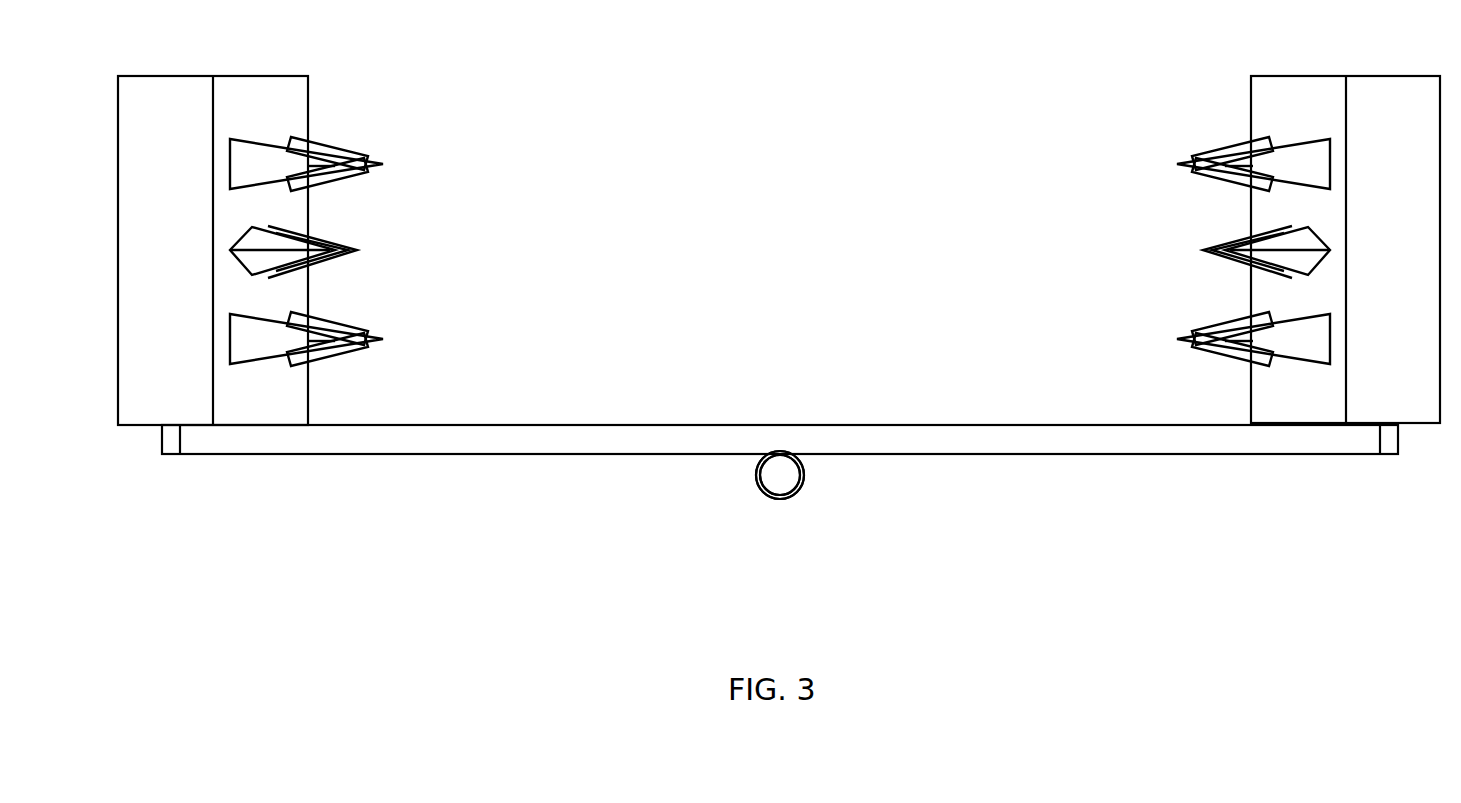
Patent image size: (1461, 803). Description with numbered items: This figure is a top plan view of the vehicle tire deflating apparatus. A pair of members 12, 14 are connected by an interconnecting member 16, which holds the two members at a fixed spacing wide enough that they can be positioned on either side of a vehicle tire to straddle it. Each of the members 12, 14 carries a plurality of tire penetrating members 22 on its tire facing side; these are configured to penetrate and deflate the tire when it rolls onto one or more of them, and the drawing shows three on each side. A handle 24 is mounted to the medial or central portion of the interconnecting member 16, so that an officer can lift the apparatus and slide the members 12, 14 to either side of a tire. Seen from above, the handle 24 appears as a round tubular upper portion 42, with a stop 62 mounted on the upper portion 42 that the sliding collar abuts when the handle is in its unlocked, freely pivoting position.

The member 12 is at (181, 92).
The member 14 is at (1416, 91).
The interconnecting member 16 is at (783, 437).
The tire penetrating member 22 is at (318, 335).
The handle 24 is at (785, 505).
The upper portion 42 is at (779, 474).
The stop 62 is at (807, 472).